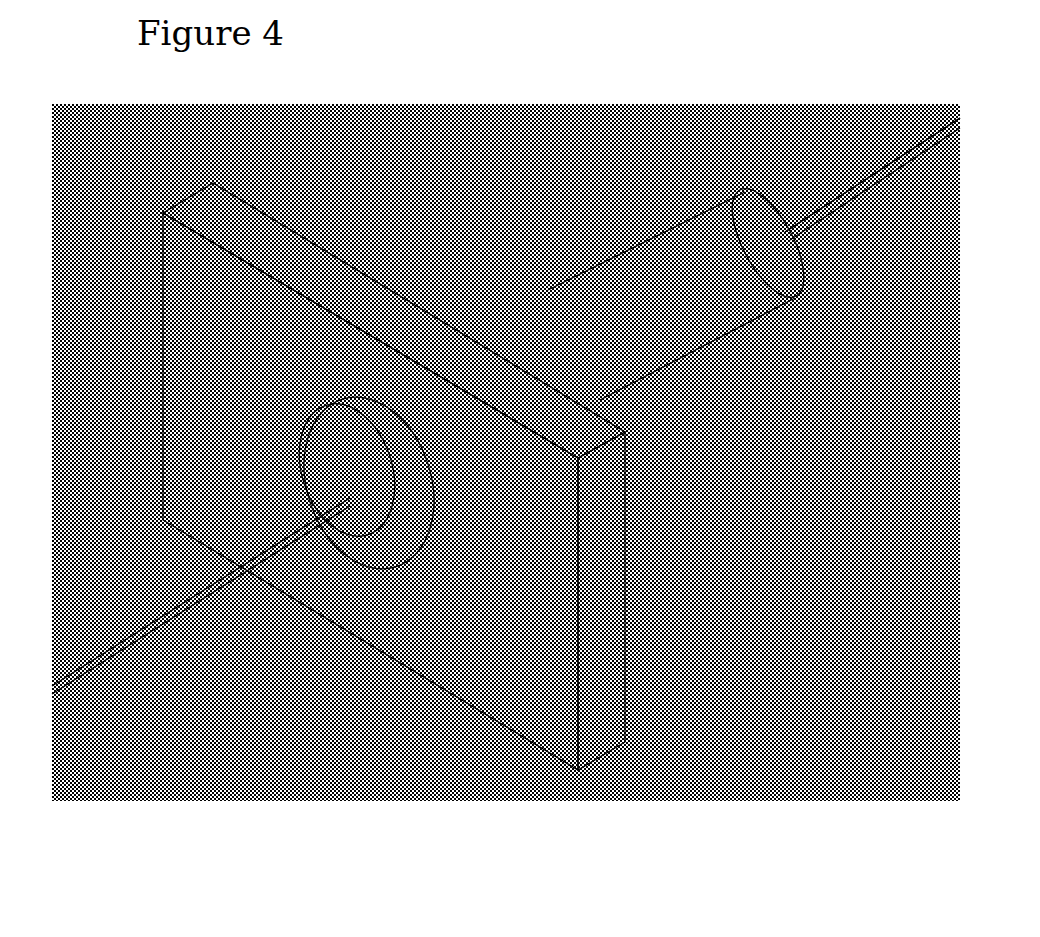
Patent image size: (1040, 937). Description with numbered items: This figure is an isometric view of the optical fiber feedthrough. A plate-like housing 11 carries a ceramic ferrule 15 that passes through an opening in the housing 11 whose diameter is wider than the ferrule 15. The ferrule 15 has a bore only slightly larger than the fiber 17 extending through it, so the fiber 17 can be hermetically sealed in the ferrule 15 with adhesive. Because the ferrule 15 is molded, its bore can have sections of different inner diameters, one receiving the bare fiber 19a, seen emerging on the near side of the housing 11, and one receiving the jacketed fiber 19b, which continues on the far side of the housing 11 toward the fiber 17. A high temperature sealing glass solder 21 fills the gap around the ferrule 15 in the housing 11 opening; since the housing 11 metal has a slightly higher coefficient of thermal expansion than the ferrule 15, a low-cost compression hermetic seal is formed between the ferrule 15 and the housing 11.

The housing 11 is at (214, 499).
The ceramic ferrule 15 is at (709, 277).
The fiber 17 is at (907, 172).
The bare fiber 19a is at (110, 648).
The jacketed fiber 19b is at (838, 193).
The sealing glass solder 21 is at (395, 572).